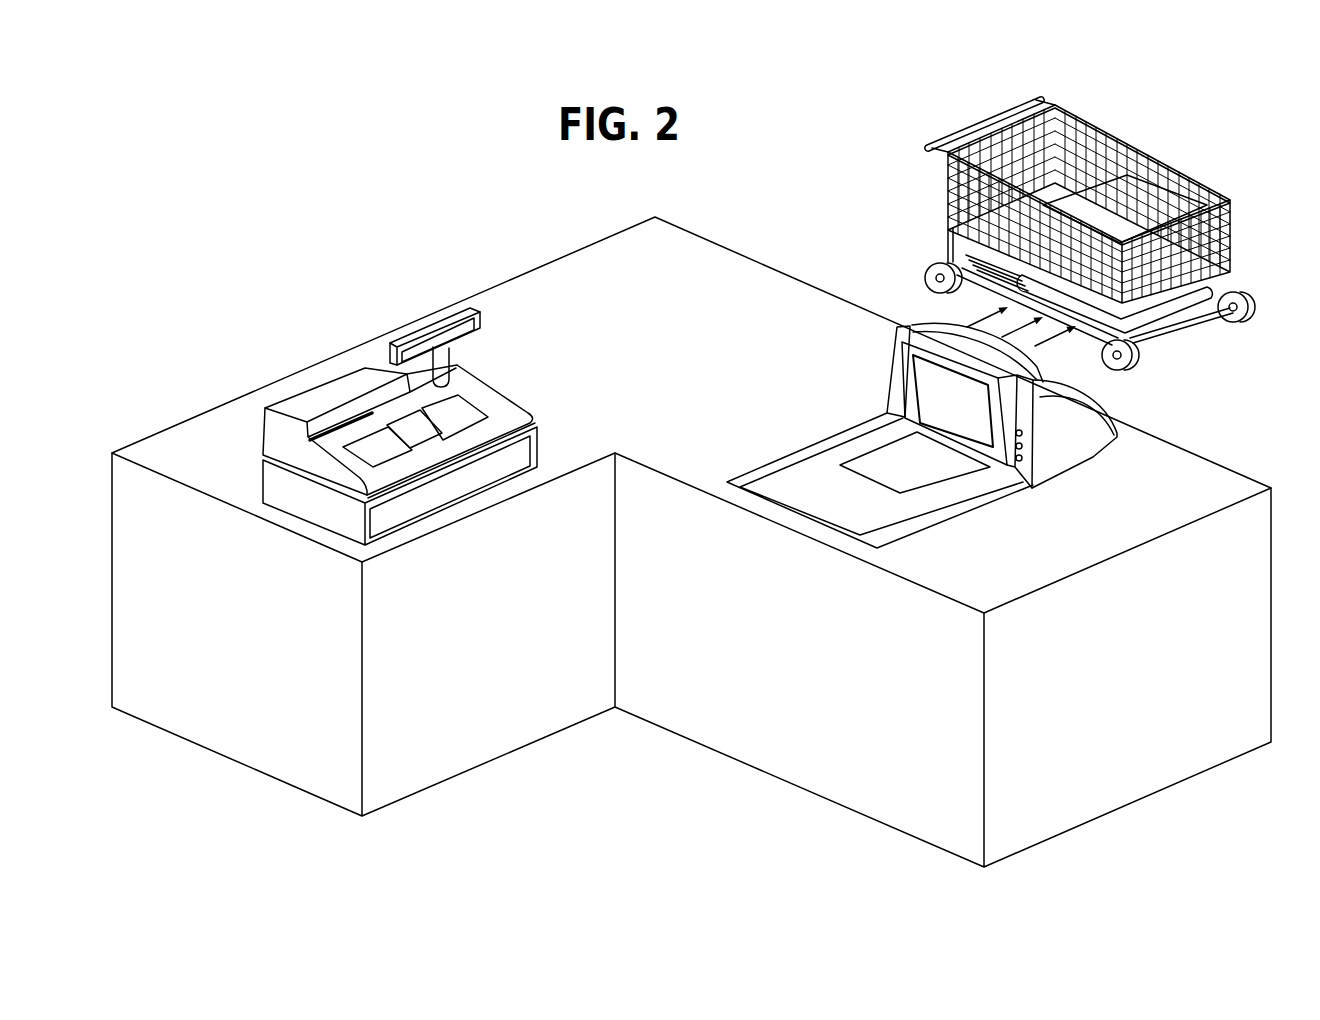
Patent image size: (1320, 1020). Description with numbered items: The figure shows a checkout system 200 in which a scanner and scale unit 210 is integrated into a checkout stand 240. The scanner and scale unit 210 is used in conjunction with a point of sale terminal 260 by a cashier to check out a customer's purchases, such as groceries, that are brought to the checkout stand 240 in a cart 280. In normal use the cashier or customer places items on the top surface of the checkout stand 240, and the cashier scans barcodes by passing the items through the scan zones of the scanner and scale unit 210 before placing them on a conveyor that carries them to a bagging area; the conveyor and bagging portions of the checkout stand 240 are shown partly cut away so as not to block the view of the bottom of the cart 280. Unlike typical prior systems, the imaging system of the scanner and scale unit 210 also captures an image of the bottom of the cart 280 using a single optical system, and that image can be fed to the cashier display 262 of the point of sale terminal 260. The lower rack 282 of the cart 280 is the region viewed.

The checkout system 200 is at (321, 195).
The scanner and scale unit 210 is at (887, 368).
The checkout stand 240 is at (1000, 567).
The point of sale terminal 260 is at (314, 388).
The cashier display 262 is at (422, 342).
The cart 280 is at (1157, 158).
The cart lower rack 282 is at (1167, 318).